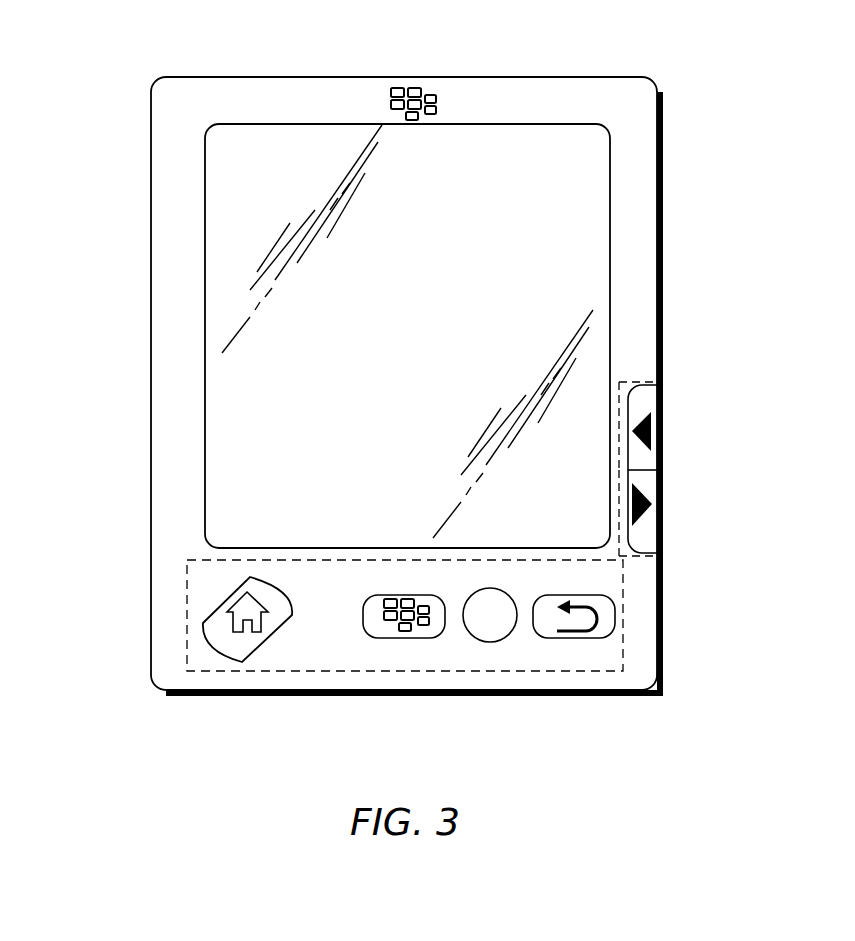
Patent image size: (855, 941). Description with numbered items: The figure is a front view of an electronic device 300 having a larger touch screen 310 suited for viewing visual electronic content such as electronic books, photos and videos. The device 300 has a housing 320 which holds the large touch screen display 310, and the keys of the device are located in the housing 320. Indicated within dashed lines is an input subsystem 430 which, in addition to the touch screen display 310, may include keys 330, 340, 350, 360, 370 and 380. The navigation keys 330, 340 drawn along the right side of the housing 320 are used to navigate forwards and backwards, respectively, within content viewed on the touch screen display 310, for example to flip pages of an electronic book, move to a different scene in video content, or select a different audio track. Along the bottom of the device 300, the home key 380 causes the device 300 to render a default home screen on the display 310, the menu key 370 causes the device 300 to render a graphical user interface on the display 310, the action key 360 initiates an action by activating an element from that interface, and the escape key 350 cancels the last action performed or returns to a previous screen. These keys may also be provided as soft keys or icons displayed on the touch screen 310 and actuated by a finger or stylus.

The electronic device 300 is at (154, 49).
The touch screen display 310 is at (595, 216).
The housing 320 is at (663, 144).
The navigation key 330 is at (638, 398).
The navigation key 340 is at (638, 530).
The escape key 350 is at (607, 620).
The action key 360 is at (490, 625).
The menu key 370 is at (402, 634).
The home key 380 is at (225, 602).
The input subsystem 430 is at (623, 584).